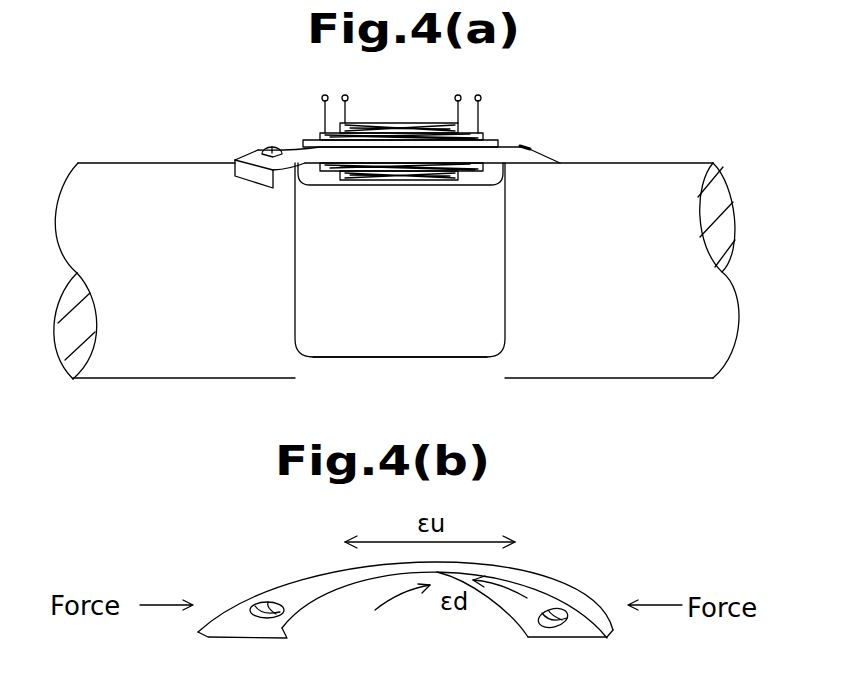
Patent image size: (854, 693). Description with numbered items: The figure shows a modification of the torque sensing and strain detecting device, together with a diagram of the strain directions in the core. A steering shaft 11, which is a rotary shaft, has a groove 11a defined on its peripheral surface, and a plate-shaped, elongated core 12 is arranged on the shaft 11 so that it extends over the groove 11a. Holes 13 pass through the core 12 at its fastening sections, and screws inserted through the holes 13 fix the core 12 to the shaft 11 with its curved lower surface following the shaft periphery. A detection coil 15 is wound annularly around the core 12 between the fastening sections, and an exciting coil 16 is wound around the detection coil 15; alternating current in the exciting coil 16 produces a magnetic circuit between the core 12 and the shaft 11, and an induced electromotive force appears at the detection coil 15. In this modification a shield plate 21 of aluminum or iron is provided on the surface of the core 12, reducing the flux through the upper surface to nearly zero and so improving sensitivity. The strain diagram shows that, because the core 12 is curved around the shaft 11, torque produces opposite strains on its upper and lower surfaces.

In FIG. 4A, the steering shaft 11 is at (720, 357).
In FIG. 4A, the groove 11a is at (430, 353).
In FIG. 4A, the core 12 is at (537, 160).
In FIG. 4B, the core 12 is at (562, 578).
In FIG. 4A, the holes 13 is at (258, 167).
In FIG. 4B, the holes 13 is at (260, 603).
In FIG. 4A, the detection coil 15 is at (467, 130).
In FIG. 4A, the exciting coil 16 is at (407, 122).
In FIG. 4A, the shield plate 21 is at (498, 142).